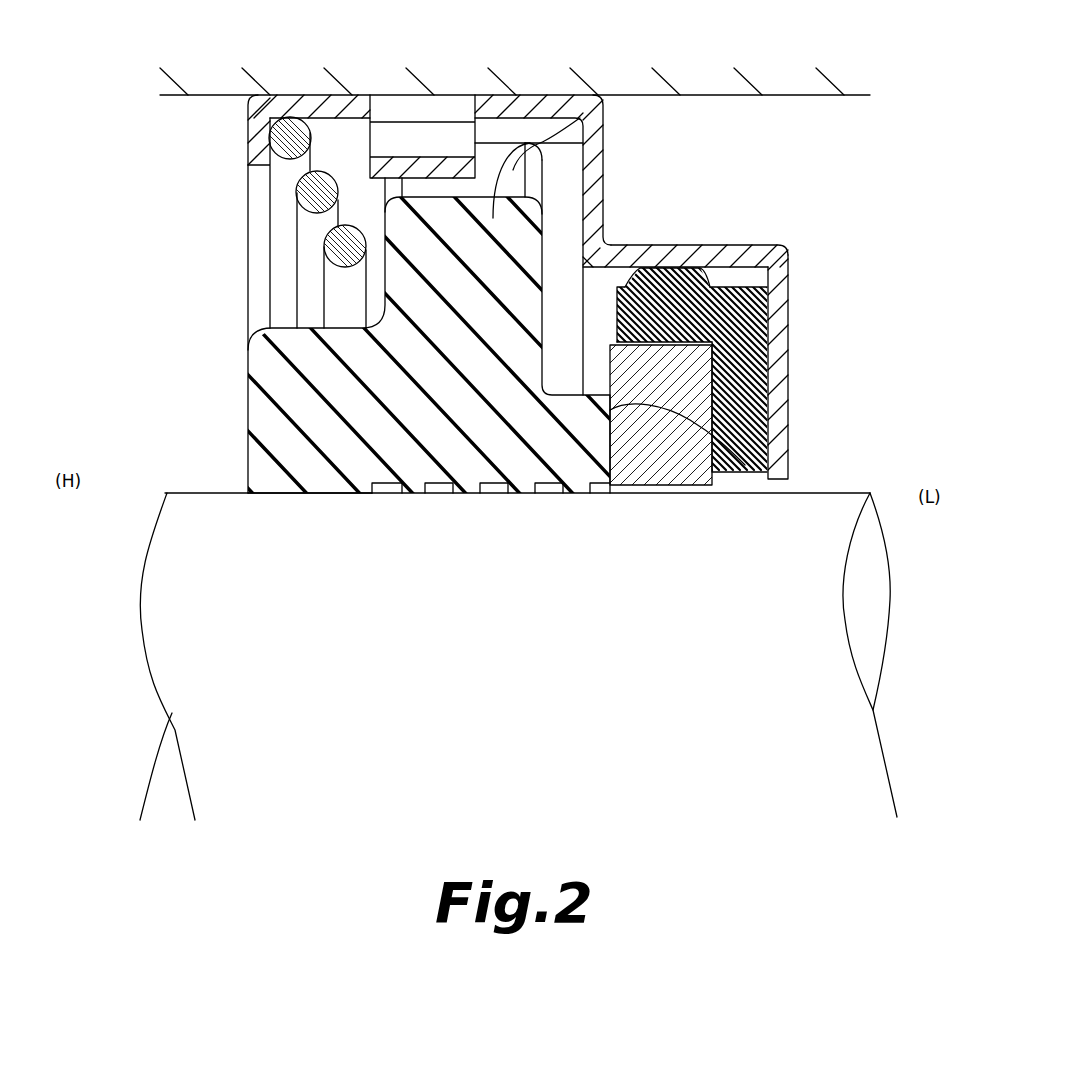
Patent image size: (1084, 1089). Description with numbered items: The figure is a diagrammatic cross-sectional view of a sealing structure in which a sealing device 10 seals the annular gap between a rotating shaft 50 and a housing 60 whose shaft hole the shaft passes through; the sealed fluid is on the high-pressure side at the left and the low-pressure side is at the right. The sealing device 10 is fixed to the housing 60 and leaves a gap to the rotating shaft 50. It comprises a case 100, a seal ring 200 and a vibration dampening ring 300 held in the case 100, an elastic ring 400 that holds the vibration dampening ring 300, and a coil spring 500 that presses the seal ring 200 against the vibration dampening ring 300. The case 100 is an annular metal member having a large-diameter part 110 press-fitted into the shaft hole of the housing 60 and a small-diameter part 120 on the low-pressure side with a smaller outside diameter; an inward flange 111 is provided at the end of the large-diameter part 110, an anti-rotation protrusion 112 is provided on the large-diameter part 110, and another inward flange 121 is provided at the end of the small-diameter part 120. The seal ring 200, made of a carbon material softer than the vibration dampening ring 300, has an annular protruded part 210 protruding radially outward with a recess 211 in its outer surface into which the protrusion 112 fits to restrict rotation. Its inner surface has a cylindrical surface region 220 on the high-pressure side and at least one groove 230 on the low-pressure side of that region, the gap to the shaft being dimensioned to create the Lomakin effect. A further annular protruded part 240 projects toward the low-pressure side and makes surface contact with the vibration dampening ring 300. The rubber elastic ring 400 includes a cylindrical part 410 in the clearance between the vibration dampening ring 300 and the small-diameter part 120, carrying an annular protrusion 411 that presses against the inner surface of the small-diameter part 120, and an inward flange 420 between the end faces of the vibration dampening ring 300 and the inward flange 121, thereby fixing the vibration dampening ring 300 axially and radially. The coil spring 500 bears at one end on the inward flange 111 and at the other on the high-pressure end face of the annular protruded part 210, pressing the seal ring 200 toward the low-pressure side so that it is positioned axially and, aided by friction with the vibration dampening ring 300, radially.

The sealing device 10 is at (768, 157).
The rotating shaft 50 is at (518, 656).
The housing 60 is at (515, 64).
The case 100 is at (722, 223).
The large-diameter part 110 is at (543, 97).
The inward flange 111 is at (250, 138).
The anti-rotation protrusion 112 is at (395, 162).
The small-diameter part 120 is at (670, 250).
The inward flange 121 is at (780, 362).
The seal ring 200 is at (225, 398).
The annular protruded part 210 is at (515, 172).
The recess 211 is at (607, 140).
The cylindrical surface region 220 is at (290, 493).
The groove 230 is at (437, 494).
The annular protruded part 240 is at (768, 440).
The vibration dampening ring 300 is at (667, 457).
The elastic ring 400 is at (750, 278).
The cylindrical part 410 is at (768, 310).
The annular protrusion 411 is at (693, 262).
The inward flange 420 is at (770, 393).
The coil spring 500 is at (300, 213).